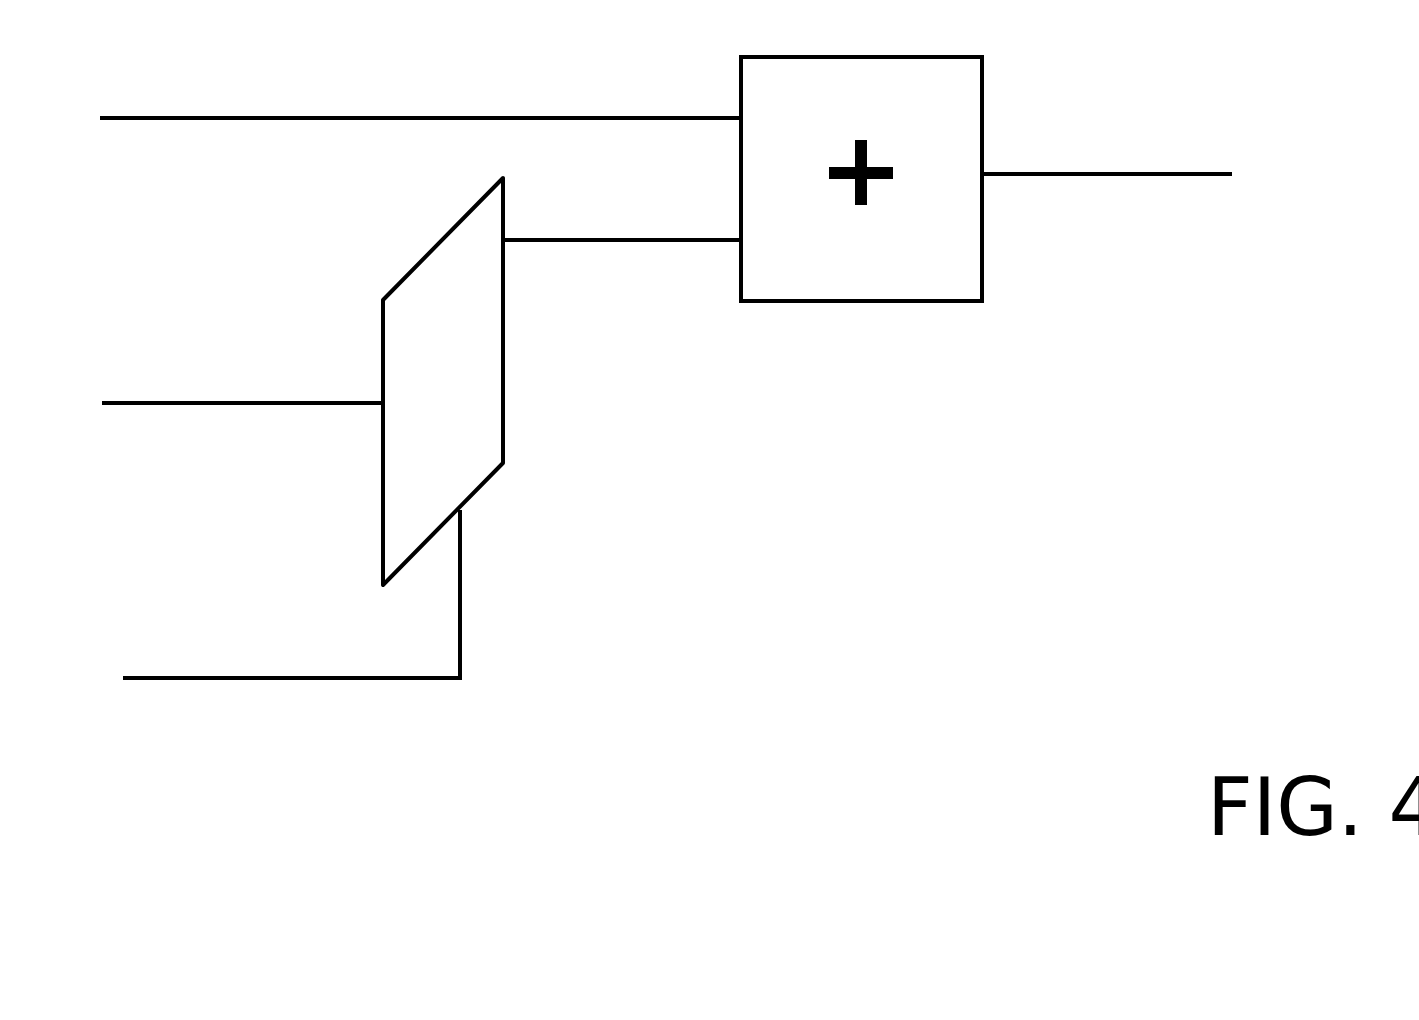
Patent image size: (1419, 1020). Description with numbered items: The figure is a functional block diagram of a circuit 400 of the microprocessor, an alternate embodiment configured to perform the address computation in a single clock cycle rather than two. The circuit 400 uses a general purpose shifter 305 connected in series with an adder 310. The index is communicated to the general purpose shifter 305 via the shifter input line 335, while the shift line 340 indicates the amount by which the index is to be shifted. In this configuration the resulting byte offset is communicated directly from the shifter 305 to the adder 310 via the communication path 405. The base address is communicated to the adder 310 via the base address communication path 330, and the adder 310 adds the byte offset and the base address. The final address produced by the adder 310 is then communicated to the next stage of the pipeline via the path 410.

The base address communication path 330 is at (139, 116).
The shifter input line 335 is at (155, 402).
The shift line 340 is at (158, 676).
The general purpose shifter 305 is at (505, 322).
The communication path 405 is at (595, 238).
The adder 310 is at (984, 243).
The path 410 is at (1110, 172).
The circuit 400 is at (503, 828).